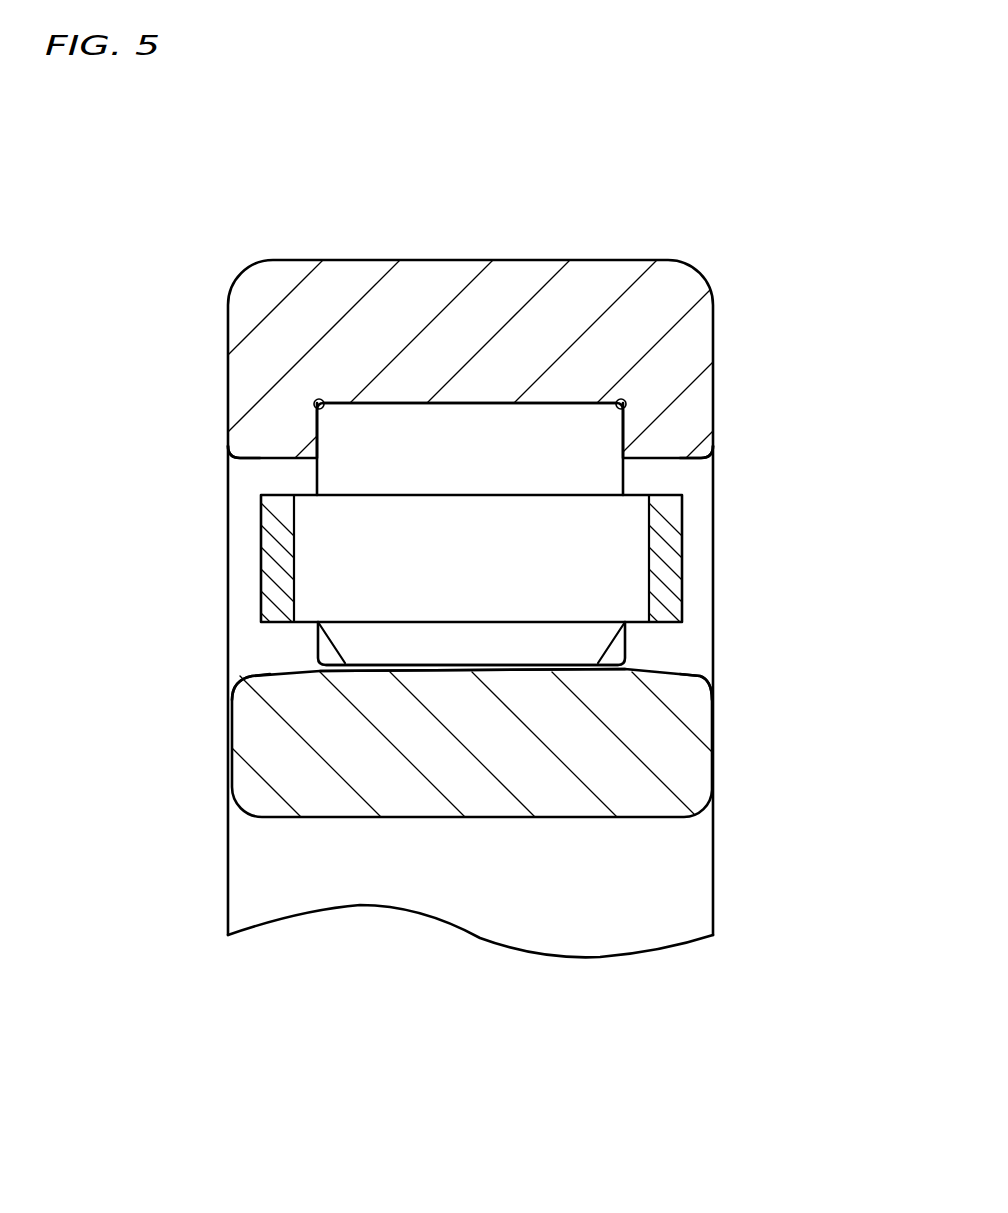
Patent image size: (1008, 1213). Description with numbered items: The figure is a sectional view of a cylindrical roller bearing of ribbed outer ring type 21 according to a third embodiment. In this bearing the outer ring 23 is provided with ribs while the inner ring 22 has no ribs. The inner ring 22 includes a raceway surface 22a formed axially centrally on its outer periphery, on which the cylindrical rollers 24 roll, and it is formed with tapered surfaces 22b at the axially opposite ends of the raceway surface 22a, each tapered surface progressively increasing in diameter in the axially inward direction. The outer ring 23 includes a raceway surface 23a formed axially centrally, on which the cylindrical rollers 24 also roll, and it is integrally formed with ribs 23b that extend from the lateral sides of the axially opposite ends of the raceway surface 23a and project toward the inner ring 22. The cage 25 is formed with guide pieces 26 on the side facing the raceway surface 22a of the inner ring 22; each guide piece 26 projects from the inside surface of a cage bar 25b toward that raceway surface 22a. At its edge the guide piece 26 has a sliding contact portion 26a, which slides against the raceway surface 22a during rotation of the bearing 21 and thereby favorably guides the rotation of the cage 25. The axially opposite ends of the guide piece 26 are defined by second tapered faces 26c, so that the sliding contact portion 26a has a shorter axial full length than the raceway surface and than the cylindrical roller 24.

The cylindrical roller bearing of ribbed outer ring type 21 is at (709, 228).
The inner ring 22 is at (686, 746).
The raceway surface of the inner ring 22a is at (468, 660).
The tapered surface 22b is at (268, 676).
The outer ring 23 is at (681, 332).
The raceway surface of the outer ring 23a is at (393, 403).
The rib 23b is at (248, 461).
The cylindrical roller 24 is at (598, 478).
The cage 25 is at (445, 565).
The cage bar 25b is at (318, 600).
The guide piece 26 is at (473, 802).
The sliding contact portion 26a is at (437, 668).
The second tapered face 26c is at (321, 660).